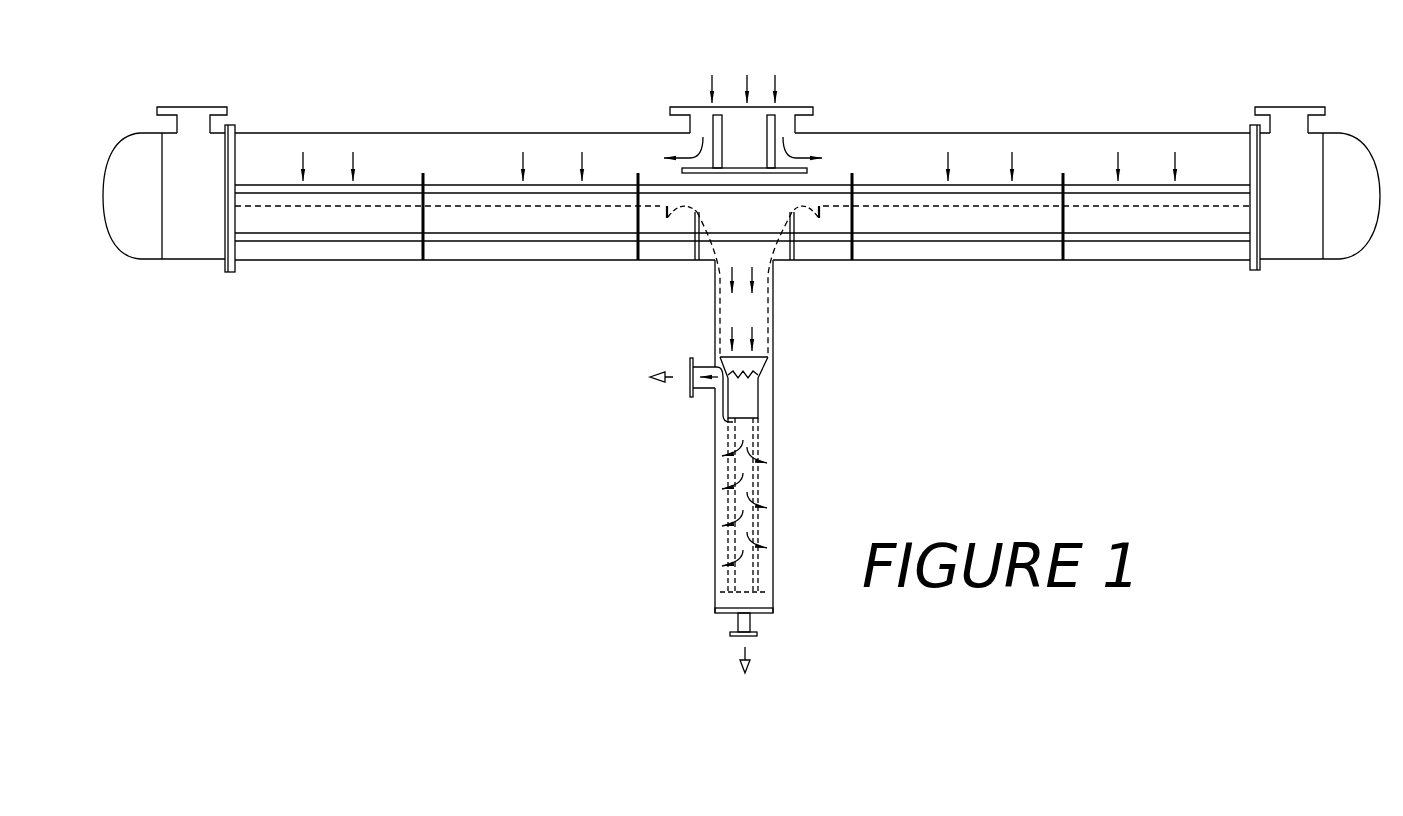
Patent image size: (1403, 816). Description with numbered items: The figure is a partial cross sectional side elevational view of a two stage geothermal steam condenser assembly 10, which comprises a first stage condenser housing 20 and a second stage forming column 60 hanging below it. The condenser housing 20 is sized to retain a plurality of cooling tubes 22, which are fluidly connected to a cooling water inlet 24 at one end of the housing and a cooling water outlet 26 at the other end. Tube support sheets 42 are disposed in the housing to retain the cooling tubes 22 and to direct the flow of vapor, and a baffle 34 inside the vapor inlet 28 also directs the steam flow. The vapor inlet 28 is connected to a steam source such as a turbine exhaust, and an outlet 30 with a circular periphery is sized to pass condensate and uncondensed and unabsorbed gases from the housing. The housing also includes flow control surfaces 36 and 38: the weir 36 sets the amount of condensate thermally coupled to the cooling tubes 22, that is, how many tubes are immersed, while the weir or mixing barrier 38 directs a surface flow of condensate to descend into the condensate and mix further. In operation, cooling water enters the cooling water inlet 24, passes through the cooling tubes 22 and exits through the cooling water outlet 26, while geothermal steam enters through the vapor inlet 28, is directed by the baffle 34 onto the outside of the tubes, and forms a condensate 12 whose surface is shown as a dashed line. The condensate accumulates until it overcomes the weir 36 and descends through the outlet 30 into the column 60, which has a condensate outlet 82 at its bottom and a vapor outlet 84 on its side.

The two stage geothermal steam condenser assembly 10 is at (510, 455).
The condensate 12 is at (486, 204).
The condenser housing 20 is at (1068, 112).
The cooling tubes 22 is at (393, 184).
The cooling water inlet 24 is at (1294, 104).
The cooling water outlet 26 is at (186, 102).
The vapor inlet 28 is at (689, 106).
The outlet 30 is at (775, 265).
The baffle 34 is at (753, 165).
The weir 36 is at (694, 258).
The mixing barrier 38 is at (666, 216).
The tube support sheets 42 is at (637, 172).
The column 60 is at (800, 483).
The condensate outlet 82 is at (751, 638).
The vapor outlet 84 is at (685, 382).